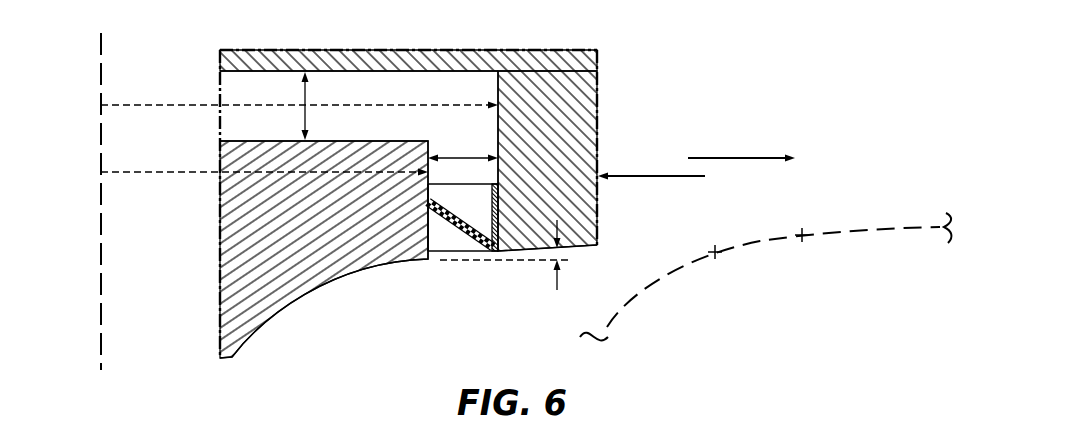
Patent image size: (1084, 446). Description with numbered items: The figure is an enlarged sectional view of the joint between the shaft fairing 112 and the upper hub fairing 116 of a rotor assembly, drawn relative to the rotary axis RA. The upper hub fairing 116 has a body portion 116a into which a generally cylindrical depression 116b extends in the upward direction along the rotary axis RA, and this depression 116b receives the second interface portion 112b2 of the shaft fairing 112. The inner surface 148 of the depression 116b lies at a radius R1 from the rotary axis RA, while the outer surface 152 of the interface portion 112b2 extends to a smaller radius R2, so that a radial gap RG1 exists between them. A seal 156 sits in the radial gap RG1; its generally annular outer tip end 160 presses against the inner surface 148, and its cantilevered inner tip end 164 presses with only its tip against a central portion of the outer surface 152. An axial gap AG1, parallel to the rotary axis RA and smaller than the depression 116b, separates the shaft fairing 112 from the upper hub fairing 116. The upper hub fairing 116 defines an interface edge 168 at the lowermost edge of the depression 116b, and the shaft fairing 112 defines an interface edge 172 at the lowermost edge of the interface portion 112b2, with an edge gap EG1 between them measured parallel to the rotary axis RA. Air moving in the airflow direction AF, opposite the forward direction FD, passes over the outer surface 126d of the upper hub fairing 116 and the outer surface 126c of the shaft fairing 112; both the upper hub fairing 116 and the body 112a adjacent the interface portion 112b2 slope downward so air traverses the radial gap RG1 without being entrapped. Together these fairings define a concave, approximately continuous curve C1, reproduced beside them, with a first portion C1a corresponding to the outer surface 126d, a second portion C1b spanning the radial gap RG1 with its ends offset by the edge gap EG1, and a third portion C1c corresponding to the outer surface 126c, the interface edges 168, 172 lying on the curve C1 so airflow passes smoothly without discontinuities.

The rotary axis RA is at (102, 72).
The shaft fairing 112 is at (329, 234).
The body 112a is at (304, 303).
The second interface portion 112b2 is at (388, 236).
The upper hub fairing 116 is at (566, 155).
The body portion 116a is at (458, 62).
The depression 116b is at (502, 117).
The inner surface 148 is at (490, 82).
The outer surface 152 is at (438, 145).
The seal 156 is at (462, 238).
The outer tip end 160 is at (500, 190).
The inner tip end 164 is at (418, 212).
The interface edge 168 is at (493, 250).
The interface edge 172 is at (433, 258).
The outer surface 126c is at (268, 320).
The outer surface 126d is at (580, 249).
The radius R1 is at (153, 105).
The radius R2 is at (157, 172).
The axial gap AG1 is at (302, 95).
The radial gap RG1 is at (467, 157).
The edge gap EG1 is at (509, 273).
The forward direction FD is at (753, 157).
The airflow direction AF is at (645, 178).
The curve C1 is at (738, 247).
The first portion C1a is at (855, 230).
The second portion C1b is at (772, 240).
The third portion C1c is at (640, 291).